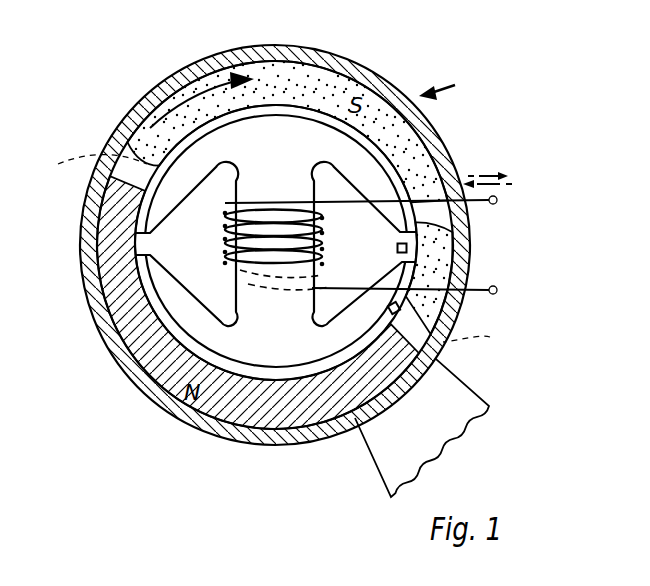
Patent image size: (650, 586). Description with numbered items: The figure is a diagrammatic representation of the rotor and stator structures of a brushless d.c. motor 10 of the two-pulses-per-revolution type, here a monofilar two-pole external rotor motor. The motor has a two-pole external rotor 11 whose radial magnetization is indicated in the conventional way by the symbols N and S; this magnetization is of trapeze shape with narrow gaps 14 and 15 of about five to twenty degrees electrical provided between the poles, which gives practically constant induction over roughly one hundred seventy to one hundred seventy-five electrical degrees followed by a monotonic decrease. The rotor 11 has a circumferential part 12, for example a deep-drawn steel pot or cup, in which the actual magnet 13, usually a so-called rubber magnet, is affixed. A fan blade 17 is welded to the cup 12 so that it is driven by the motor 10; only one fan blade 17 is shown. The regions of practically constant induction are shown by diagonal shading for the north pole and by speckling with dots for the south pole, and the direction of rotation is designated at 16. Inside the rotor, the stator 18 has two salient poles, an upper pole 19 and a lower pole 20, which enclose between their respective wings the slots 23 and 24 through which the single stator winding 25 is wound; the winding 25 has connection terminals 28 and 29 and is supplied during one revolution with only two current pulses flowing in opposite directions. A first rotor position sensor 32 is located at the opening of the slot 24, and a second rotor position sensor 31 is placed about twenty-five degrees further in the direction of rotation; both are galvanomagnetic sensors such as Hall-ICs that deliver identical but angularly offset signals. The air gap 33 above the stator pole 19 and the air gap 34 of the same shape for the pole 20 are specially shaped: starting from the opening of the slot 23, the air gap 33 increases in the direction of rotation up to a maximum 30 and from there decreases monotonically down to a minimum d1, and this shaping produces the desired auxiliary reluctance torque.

The brushless d.c. motor 10 is at (122, 80).
The external rotor 11 is at (453, 87).
The circumferential part 12 is at (347, 72).
The magnet 13 is at (414, 140).
The gap 14 is at (91, 168).
The gap 15 is at (480, 338).
The direction of rotation 16 is at (189, 101).
The fan blade 17 is at (489, 406).
The stator 18 is at (270, 159).
The upper pole 19 is at (283, 125).
The lower pole 20 is at (307, 367).
The slot 23 is at (231, 318).
The slot 24 is at (318, 324).
The stator winding 25 is at (273, 212).
The connection terminal 28 is at (497, 200).
The connection terminal 29 is at (497, 290).
The maximum 30 is at (127, 130).
The second rotor position sensor 31 is at (391, 303).
The first rotor position sensor 32 is at (398, 247).
The air gap 33 is at (243, 108).
The air gap 34 is at (264, 381).
The minimum d1 is at (455, 233).